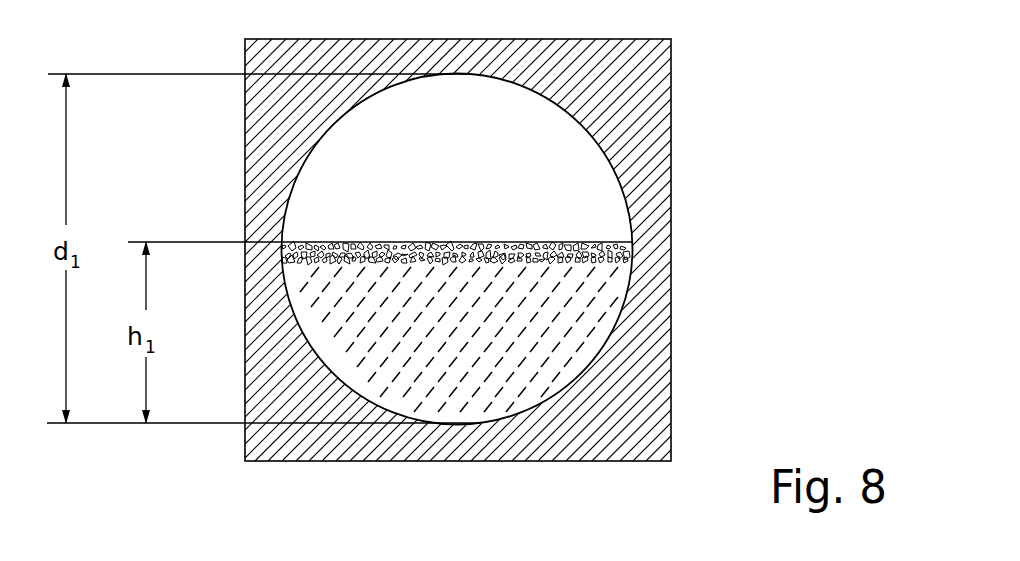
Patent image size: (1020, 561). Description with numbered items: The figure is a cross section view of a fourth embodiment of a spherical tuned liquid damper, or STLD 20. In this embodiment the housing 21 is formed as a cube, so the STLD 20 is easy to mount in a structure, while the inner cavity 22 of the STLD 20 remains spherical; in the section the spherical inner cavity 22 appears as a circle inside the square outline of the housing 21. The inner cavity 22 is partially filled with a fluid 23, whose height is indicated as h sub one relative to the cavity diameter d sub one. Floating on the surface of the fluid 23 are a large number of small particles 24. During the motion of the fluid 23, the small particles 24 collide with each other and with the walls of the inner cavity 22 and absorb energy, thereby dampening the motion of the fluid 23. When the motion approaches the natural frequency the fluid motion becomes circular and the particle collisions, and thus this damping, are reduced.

The spherical tuned liquid damper 20 is at (497, 250).
The housing 21 is at (670, 185).
The inner cavity 22 is at (626, 198).
The fluid 23 is at (562, 243).
The small particles 24 is at (386, 228).